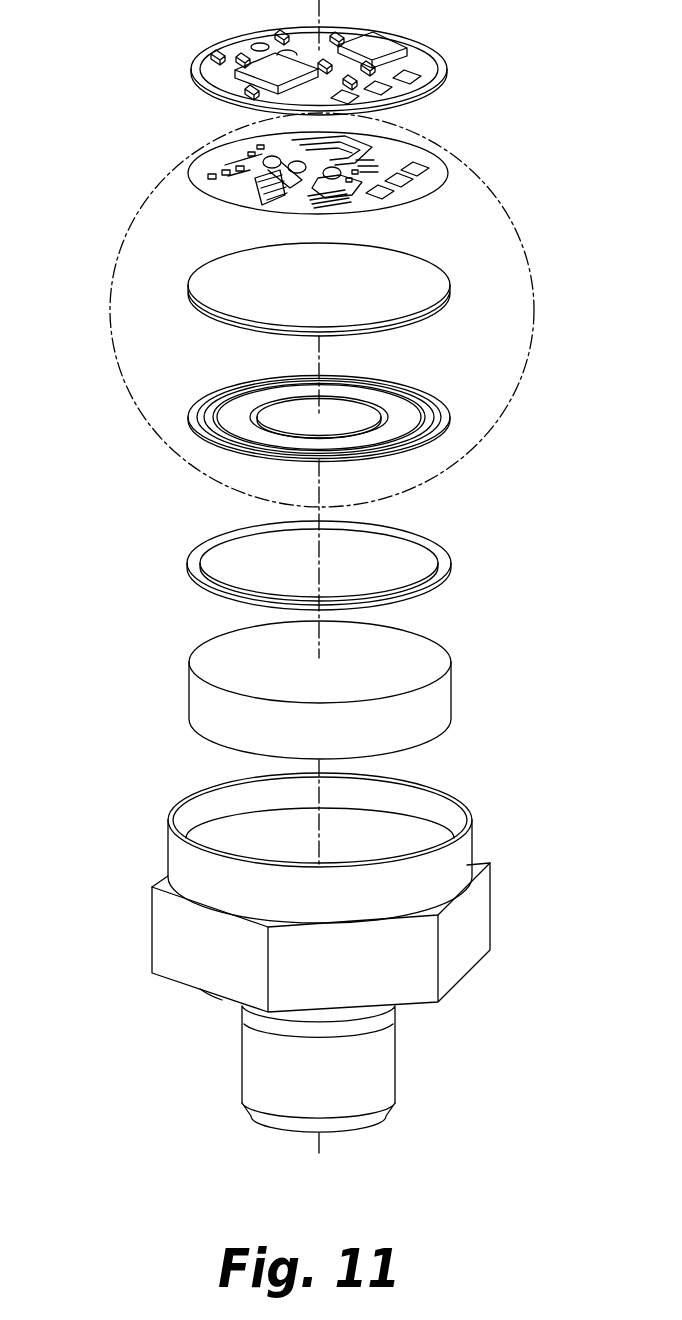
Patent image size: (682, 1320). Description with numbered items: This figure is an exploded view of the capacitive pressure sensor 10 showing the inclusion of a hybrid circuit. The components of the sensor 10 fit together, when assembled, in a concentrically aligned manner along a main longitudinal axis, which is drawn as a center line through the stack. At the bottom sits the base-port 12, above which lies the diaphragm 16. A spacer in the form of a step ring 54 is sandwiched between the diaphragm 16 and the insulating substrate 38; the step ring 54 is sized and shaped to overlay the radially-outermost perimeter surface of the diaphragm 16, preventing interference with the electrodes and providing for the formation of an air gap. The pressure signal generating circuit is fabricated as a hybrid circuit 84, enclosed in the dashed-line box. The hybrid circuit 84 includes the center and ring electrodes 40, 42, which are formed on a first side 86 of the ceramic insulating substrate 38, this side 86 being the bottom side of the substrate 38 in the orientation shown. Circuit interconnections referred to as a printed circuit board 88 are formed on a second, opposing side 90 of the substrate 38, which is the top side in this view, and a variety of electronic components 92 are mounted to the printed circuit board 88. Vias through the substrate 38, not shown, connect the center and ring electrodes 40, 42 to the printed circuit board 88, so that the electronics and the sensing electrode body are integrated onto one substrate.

The capacitive pressure sensor 10 is at (498, 62).
The base-port 12 is at (141, 919).
The diaphragm 16 is at (176, 679).
The insulating substrate 38 is at (183, 274).
The center electrode 40 is at (181, 402).
The ring electrode 42 is at (319, 417).
The step ring 54 is at (188, 541).
The hybrid circuit 84 is at (127, 217).
The first side of substrate 86 is at (420, 322).
The printed circuit board 88 is at (178, 154).
The second side of substrate 90 is at (402, 273).
The electronic components 92 is at (186, 59).